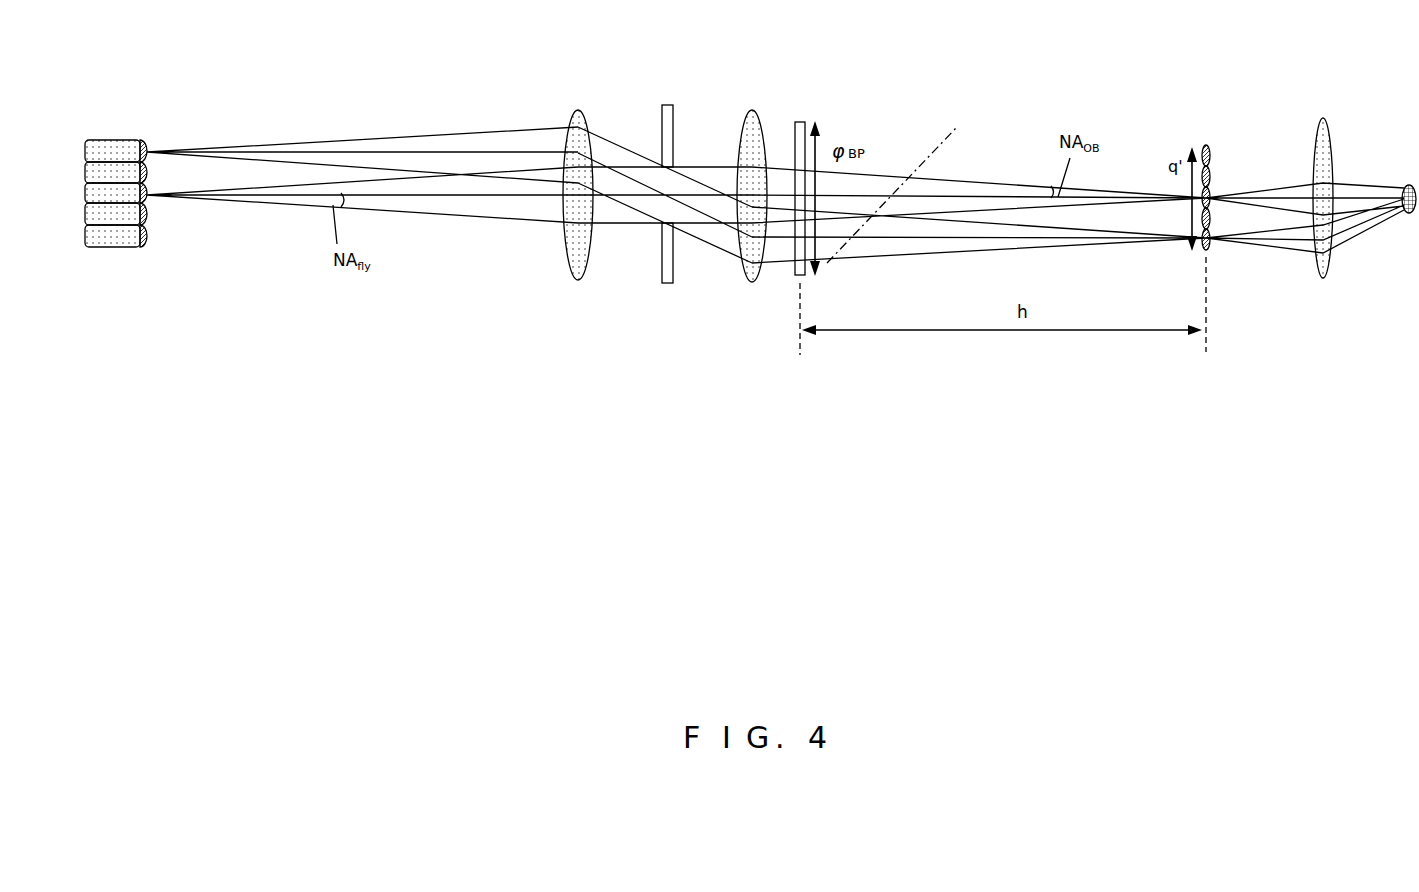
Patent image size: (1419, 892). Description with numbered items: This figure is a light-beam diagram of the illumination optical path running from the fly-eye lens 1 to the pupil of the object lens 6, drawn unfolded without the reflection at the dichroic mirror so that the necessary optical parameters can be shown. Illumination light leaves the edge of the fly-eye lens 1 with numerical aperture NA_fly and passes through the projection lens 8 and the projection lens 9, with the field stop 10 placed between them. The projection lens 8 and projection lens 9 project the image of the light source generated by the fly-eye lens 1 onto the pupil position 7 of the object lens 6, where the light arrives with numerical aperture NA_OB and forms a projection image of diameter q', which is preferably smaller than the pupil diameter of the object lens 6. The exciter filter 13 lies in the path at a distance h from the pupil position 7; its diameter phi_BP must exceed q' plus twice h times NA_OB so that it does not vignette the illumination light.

The fly-eye lens 1 is at (122, 140).
The projection lens 8 is at (577, 110).
The field stop 10 is at (667, 105).
The projection lens 9 is at (752, 110).
The exciter filter 13 is at (805, 122).
The pupil position 7 is at (1206, 145).
The object lens 6 is at (1326, 120).